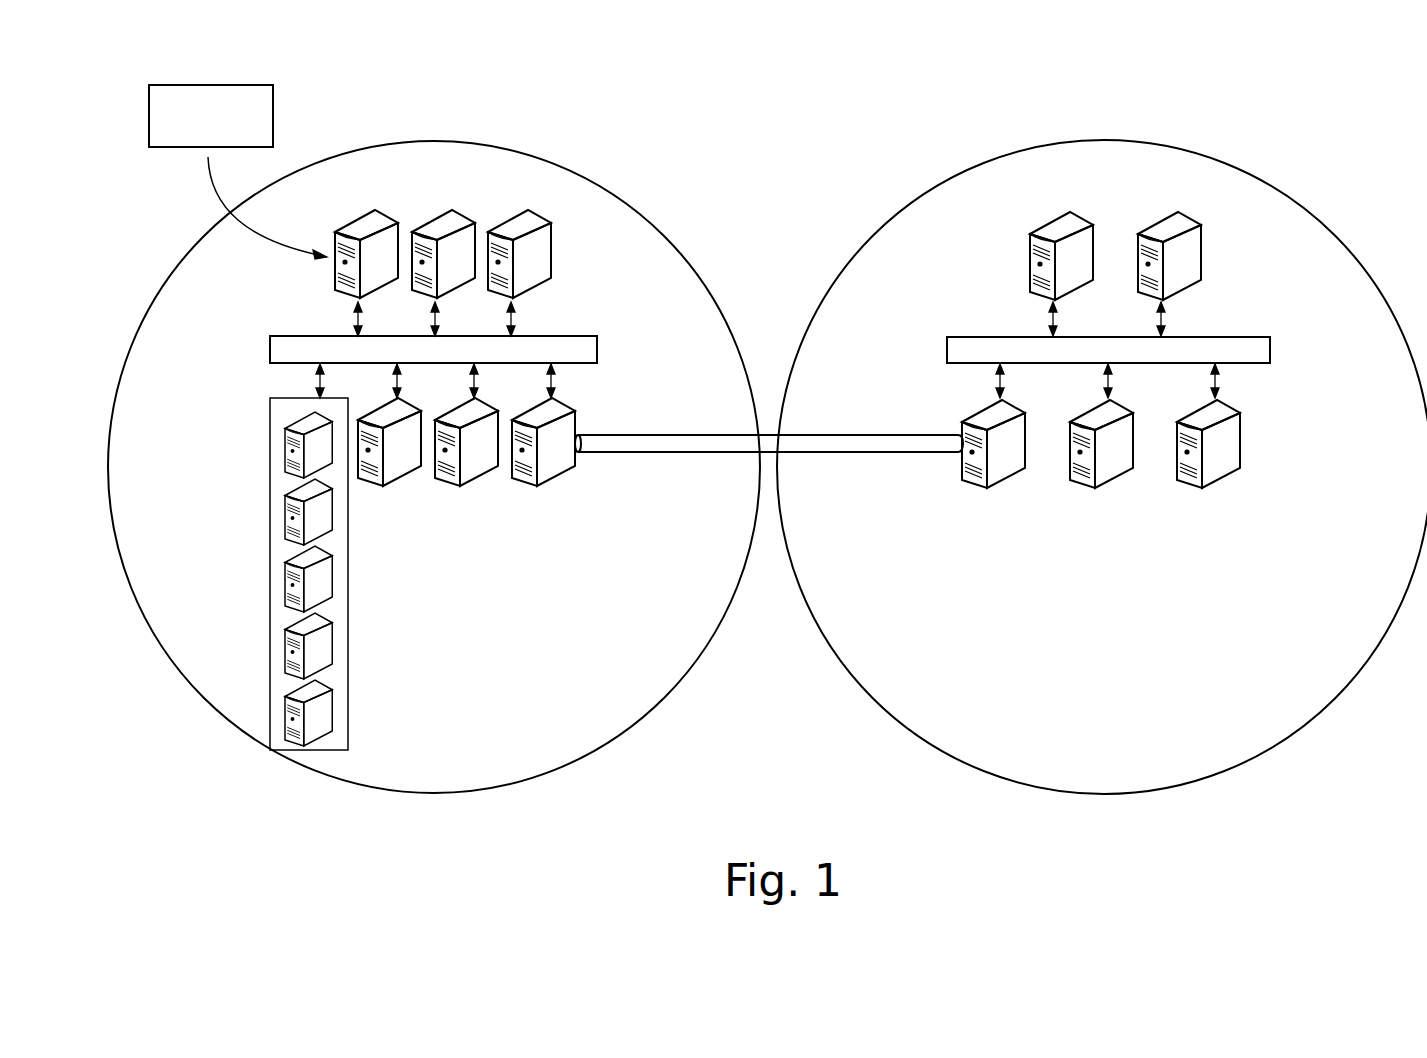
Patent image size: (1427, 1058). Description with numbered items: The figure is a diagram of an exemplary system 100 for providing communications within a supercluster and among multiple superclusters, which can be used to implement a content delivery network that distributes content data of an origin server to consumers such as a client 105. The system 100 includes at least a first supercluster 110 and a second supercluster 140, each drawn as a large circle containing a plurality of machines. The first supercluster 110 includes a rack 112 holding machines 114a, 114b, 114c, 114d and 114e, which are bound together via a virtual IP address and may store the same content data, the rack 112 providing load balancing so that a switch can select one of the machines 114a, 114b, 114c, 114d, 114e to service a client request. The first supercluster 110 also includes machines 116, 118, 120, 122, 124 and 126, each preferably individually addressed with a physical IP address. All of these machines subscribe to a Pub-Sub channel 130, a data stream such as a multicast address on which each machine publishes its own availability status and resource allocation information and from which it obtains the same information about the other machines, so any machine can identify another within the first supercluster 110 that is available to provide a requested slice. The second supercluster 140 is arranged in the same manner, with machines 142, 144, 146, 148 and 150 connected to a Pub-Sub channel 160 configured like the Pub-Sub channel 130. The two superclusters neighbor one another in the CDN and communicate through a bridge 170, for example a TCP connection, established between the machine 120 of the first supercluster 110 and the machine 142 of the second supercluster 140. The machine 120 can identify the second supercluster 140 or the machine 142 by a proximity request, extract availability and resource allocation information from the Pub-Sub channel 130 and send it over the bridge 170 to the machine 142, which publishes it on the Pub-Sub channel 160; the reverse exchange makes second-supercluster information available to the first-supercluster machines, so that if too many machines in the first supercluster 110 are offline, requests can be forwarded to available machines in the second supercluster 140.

The system 100 is at (771, 104).
The client 105 is at (245, 85).
The first supercluster 110 is at (434, 467).
The rack 112 is at (288, 398).
The machine 114a is at (285, 438).
The machine 114b is at (285, 505).
The machine 114c is at (285, 572).
The machine 114d is at (285, 639).
The machine 114e is at (285, 706).
The machine 116 is at (383, 488).
The machine 118 is at (460, 488).
The machine 120 is at (537, 488).
The machine 122 is at (376, 210).
The machine 124 is at (453, 210).
The machine 126 is at (529, 210).
The Pub-Sub channel 130 is at (551, 336).
The second supercluster 140 is at (1102, 467).
The machine 142 is at (1000, 484).
The machine 144 is at (1105, 484).
The machine 146 is at (1212, 484).
The machine 148 is at (1071, 212).
The machine 150 is at (1179, 212).
The Pub-Sub channel 160 is at (1232, 337).
The bridge 170 is at (800, 433).